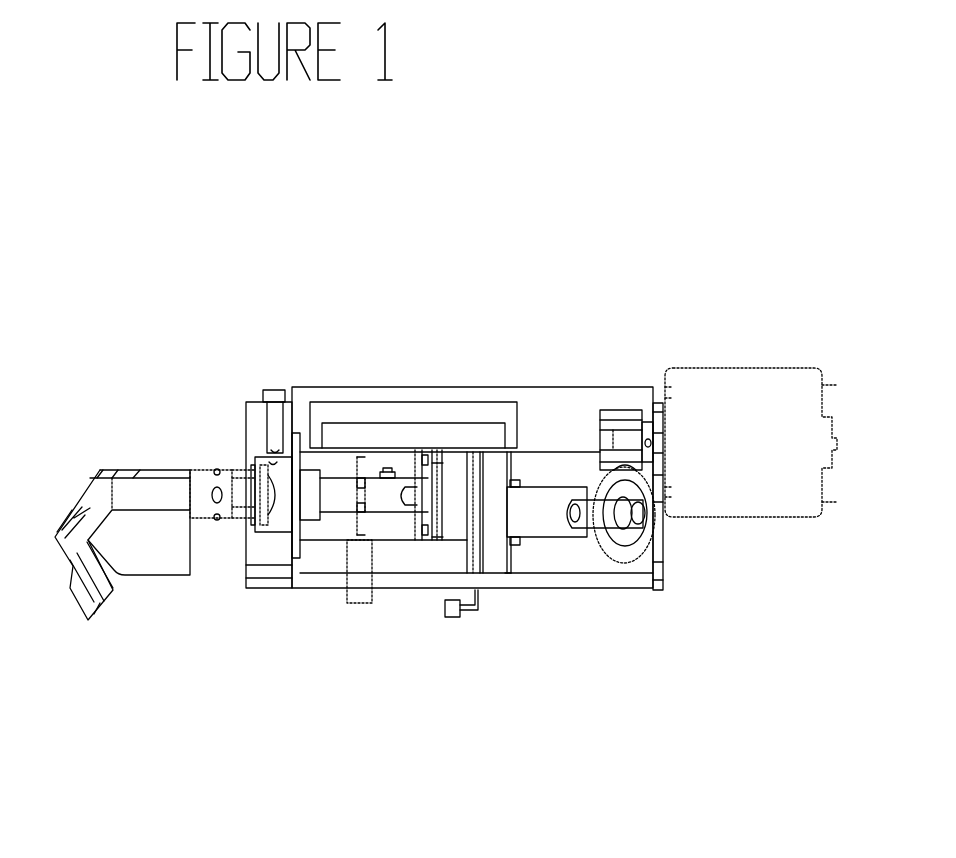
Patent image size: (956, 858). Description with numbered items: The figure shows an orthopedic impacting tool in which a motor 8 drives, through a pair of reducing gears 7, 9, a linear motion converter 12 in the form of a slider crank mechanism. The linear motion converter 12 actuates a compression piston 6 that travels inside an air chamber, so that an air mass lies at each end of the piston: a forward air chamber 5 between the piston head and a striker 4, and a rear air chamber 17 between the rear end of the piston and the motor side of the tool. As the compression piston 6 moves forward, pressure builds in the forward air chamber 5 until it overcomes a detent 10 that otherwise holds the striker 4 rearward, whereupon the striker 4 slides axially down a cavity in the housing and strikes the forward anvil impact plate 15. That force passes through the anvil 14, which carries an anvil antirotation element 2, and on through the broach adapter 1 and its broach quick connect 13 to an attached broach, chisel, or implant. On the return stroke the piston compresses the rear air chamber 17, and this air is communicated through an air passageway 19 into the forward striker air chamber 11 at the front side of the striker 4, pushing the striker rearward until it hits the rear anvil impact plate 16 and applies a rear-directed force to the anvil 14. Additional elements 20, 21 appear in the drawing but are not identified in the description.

The broach adapter 1 is at (128, 482).
The anvil antirotation element 2 is at (275, 390).
The striker 4 is at (388, 470).
The forward air chamber 5 is at (458, 533).
The compression piston 6 is at (490, 492).
The gear reducer 7 is at (622, 413).
The motor 8 is at (743, 367).
The gear reducer 9 is at (624, 510).
The detent 10 is at (358, 603).
The forward striker air chamber 11 is at (335, 527).
The linear motion converter 12 is at (620, 514).
The broach quick connect 13 is at (220, 520).
The anvil 14 is at (283, 520).
The forward anvil impact plate 15 is at (323, 495).
The rear anvil impact plate 16 is at (437, 485).
The rear air chamber 17 is at (508, 565).
The air passageway 19 is at (328, 410).
The inner wall 20 is at (397, 452).
The switch 21 is at (450, 617).